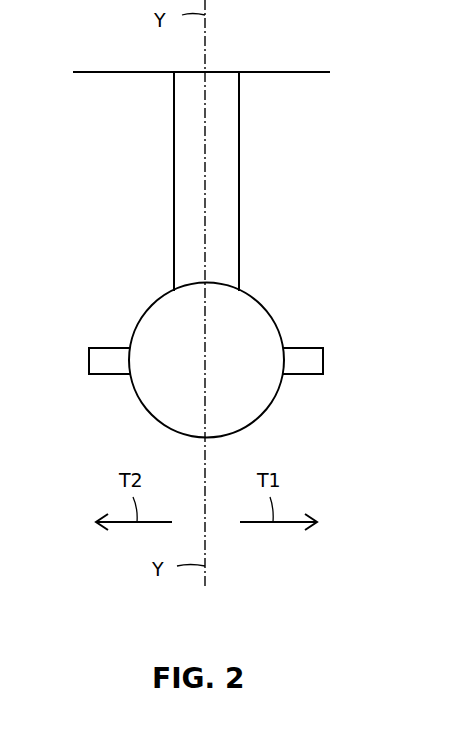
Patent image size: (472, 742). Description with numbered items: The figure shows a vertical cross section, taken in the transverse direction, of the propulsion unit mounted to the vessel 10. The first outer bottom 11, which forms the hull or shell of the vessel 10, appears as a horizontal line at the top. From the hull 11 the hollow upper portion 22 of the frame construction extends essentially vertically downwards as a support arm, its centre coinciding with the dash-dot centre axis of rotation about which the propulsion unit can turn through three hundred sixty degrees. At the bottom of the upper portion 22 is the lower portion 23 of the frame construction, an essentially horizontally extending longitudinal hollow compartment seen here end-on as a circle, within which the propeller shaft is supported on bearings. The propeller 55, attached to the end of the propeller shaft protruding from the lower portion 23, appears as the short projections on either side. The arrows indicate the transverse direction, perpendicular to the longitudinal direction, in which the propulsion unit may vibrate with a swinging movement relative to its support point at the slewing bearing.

The vessel 10 is at (316, 36).
The first outer bottom 11 is at (303, 73).
The upper portion 22 is at (178, 120).
The lower portion 23 is at (258, 315).
The propeller 55 is at (298, 367).